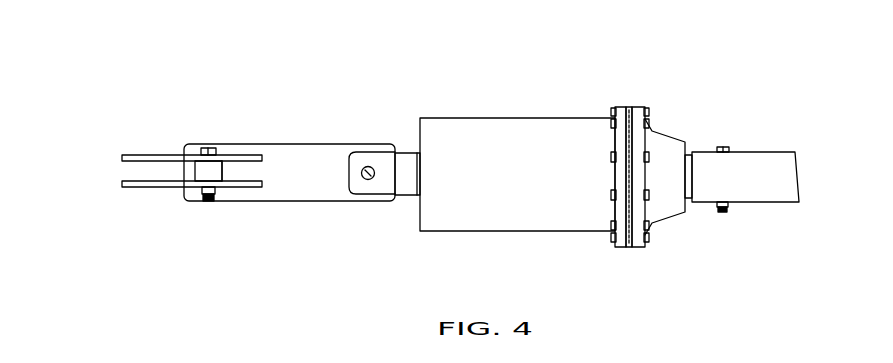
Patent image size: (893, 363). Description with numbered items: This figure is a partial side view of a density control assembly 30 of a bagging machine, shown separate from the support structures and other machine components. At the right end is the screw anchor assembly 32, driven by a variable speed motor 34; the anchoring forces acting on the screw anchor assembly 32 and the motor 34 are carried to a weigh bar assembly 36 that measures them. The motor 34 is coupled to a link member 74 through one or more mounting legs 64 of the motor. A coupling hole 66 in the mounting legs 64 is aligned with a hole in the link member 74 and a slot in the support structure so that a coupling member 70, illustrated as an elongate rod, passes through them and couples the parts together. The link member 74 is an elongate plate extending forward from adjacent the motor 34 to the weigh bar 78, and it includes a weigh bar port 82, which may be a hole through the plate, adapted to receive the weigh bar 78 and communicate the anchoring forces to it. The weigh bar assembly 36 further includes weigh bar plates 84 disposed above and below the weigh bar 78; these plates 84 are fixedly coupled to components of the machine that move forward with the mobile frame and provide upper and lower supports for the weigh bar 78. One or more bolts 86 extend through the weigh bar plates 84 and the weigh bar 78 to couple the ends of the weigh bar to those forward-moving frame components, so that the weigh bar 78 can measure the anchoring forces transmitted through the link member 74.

The density control assembly 30 is at (647, 63).
The screw anchor assembly 32 is at (780, 138).
The variable speed motor 34 is at (480, 133).
The weigh bar assembly 36 is at (250, 140).
The mounting legs 64 is at (405, 158).
The coupling hole 66 is at (361, 177).
The coupling member 70 is at (372, 180).
The link member 74 is at (310, 170).
The weigh bar 78 is at (195, 170).
The weigh bar port 82 is at (225, 172).
The weigh bar plates 84 is at (122, 183).
The bolts 86 is at (205, 148).